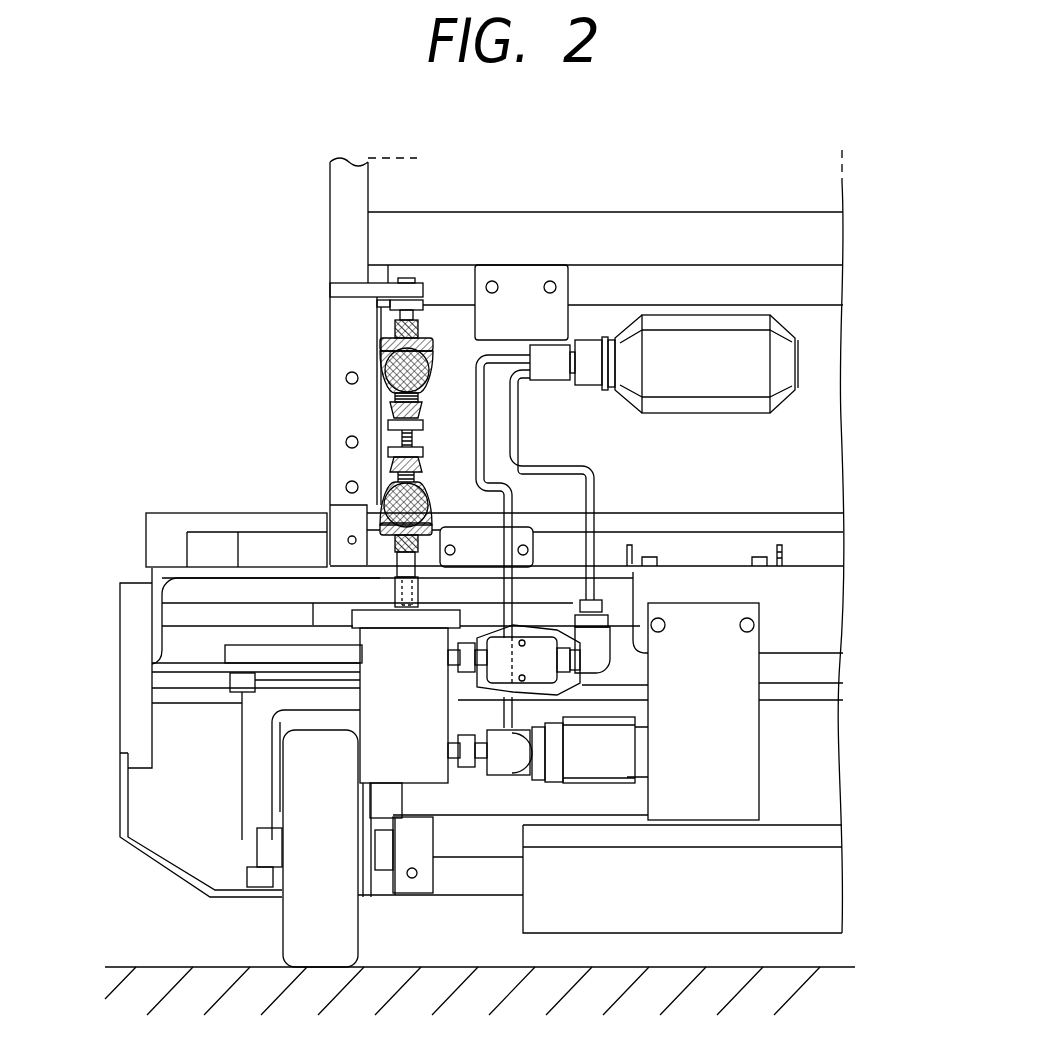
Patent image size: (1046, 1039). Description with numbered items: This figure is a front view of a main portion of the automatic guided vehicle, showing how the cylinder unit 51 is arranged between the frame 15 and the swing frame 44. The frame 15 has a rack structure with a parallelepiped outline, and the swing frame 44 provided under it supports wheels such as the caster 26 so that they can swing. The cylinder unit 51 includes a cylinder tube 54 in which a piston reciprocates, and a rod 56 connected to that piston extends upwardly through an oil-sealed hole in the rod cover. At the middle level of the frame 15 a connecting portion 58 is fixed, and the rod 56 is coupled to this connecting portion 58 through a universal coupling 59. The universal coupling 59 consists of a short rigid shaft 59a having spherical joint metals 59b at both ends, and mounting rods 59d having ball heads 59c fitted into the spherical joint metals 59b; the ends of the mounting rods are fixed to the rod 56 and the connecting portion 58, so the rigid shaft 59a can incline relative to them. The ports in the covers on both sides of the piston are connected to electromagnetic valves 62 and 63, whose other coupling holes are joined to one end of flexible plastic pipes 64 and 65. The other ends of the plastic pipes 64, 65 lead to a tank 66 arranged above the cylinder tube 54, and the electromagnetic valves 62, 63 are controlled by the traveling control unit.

The frame 15 is at (330, 222).
The connecting portion 58 is at (383, 281).
The universal coupling 59 is at (394, 399).
The rigid shaft 59a is at (390, 432).
The spherical joint metal 59b is at (431, 352).
The ball head 59c is at (377, 322).
The mounting rod 59d is at (383, 358).
The rod 56 is at (418, 586).
The electromagnetic valve 62 is at (492, 672).
The cylinder unit 51 is at (452, 776).
The electromagnetic valve 63 is at (525, 758).
The cylinder tube 54 is at (425, 777).
The caster 26 is at (365, 927).
The flexible plastic pipe 64 is at (597, 487).
The flexible plastic pipe 65 is at (477, 423).
The tank 66 is at (735, 413).
The swing frame 44 is at (807, 682).